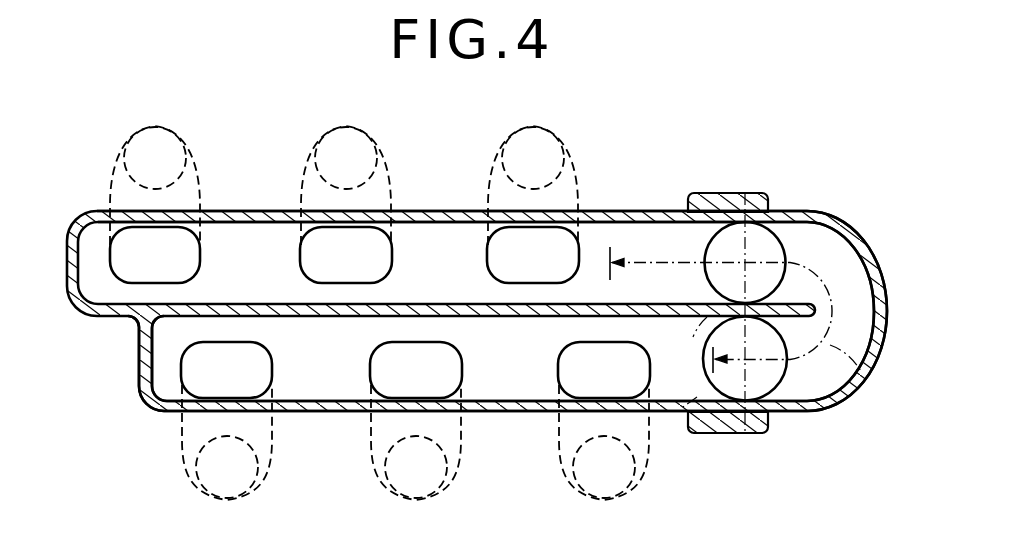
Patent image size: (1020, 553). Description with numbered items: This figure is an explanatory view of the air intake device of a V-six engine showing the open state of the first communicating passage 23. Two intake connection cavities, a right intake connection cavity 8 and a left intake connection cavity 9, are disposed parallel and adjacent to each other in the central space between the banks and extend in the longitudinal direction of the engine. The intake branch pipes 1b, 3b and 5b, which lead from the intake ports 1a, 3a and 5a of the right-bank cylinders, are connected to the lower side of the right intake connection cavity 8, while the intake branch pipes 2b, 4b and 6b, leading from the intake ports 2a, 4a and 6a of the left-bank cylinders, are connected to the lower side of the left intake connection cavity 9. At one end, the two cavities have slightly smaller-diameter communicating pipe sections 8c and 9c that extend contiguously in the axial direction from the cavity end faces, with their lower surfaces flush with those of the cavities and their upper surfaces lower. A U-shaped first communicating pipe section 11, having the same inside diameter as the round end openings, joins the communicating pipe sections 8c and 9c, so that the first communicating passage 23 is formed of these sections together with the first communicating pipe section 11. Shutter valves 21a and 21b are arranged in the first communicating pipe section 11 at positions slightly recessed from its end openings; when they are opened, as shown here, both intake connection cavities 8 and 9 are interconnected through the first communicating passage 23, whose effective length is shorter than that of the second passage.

The intake port 1a is at (141, 133).
The intake branch pipe 1b is at (110, 183).
The intake port 2a is at (225, 491).
The intake branch pipe 2b is at (190, 453).
The intake port 3a is at (322, 143).
The intake branch pipe 3b is at (300, 185).
The intake port 4a is at (413, 491).
The intake branch pipe 4b is at (380, 453).
The intake port 5a is at (515, 143).
The intake branch pipe 5b is at (492, 185).
The intake port 6a is at (602, 491).
The intake branch pipe 6b is at (567, 453).
The right intake connection cavity 8 is at (73, 232).
The communicating pipe section 8c is at (600, 209).
The left intake connection cavity 9 is at (170, 350).
The communicating pipe section 9c is at (686, 402).
The first communicating pipe section 11 is at (873, 248).
The shutter valve 21a is at (770, 250).
The shutter valve 21b is at (772, 376).
The first communicating passage 23 is at (862, 375).